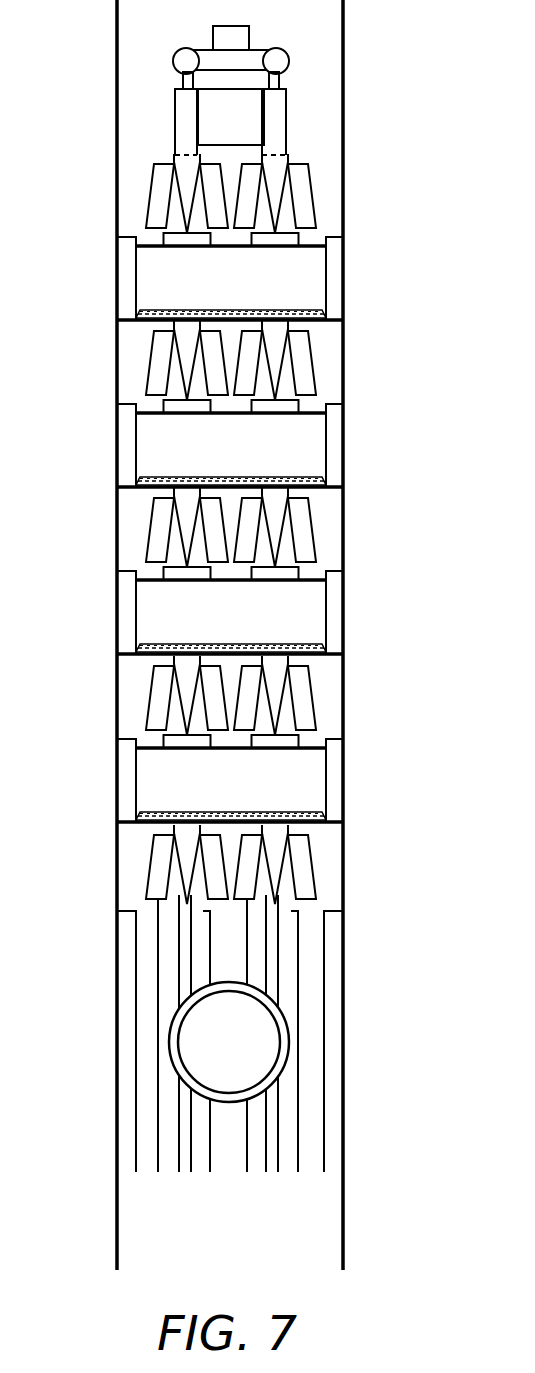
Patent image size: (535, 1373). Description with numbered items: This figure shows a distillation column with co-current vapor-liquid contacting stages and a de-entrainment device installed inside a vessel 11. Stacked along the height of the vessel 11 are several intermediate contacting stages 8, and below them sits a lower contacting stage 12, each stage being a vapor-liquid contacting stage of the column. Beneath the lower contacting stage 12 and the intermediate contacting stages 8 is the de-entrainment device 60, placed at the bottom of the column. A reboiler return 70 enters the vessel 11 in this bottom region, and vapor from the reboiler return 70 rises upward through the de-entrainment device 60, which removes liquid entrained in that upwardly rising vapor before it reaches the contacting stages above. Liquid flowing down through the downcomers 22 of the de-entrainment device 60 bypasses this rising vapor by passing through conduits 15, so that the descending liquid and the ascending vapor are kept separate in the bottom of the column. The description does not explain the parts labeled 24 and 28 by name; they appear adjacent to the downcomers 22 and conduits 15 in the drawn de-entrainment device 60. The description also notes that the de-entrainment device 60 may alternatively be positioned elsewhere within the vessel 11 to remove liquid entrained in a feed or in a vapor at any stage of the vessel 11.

The vessel 11 is at (345, 70).
The intermediate contacting stage 8 is at (368, 604).
The lower contacting stage 12 is at (367, 775).
The de-entrainment device 60 is at (241, 1017).
The downcomer 22 is at (185, 842).
The swirl block 24 is at (147, 879).
The reboiler return 70 is at (228, 1041).
The conduit 15 is at (190, 1155).
The outlet pipe 28 is at (247, 1158).